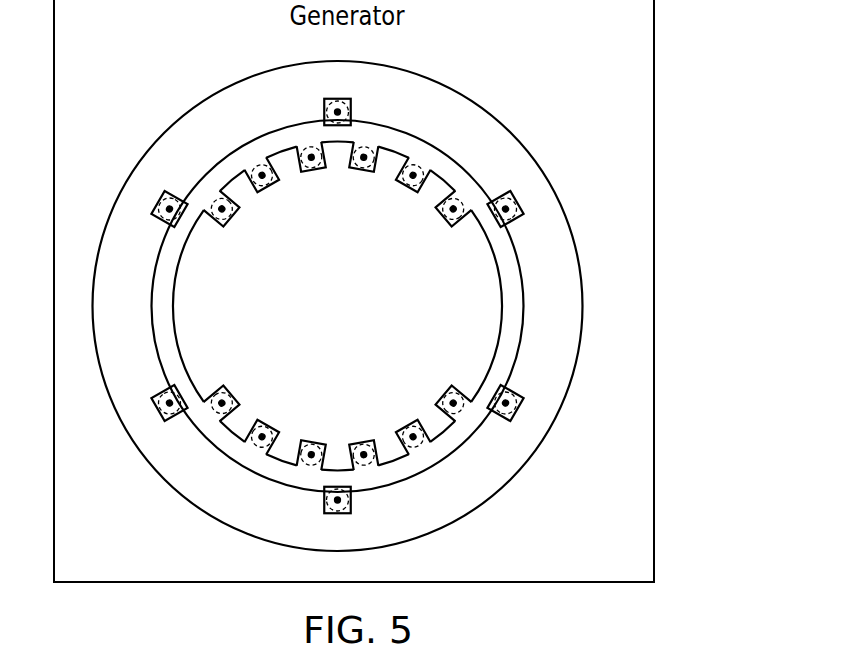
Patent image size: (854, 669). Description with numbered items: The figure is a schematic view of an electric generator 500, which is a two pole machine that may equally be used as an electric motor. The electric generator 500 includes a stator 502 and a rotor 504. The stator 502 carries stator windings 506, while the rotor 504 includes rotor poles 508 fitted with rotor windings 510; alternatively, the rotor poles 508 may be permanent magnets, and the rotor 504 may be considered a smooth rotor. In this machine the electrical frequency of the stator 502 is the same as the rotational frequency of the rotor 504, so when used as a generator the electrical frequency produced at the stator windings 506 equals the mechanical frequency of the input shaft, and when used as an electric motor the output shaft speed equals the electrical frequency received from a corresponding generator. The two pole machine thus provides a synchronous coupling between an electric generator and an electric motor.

The electric generator 500 is at (654, 98).
The stator 502 is at (507, 143).
The rotor 504 is at (382, 187).
The stator windings 506 is at (510, 392).
The rotor poles 508 is at (203, 225).
The rotor windings 510 is at (455, 200).